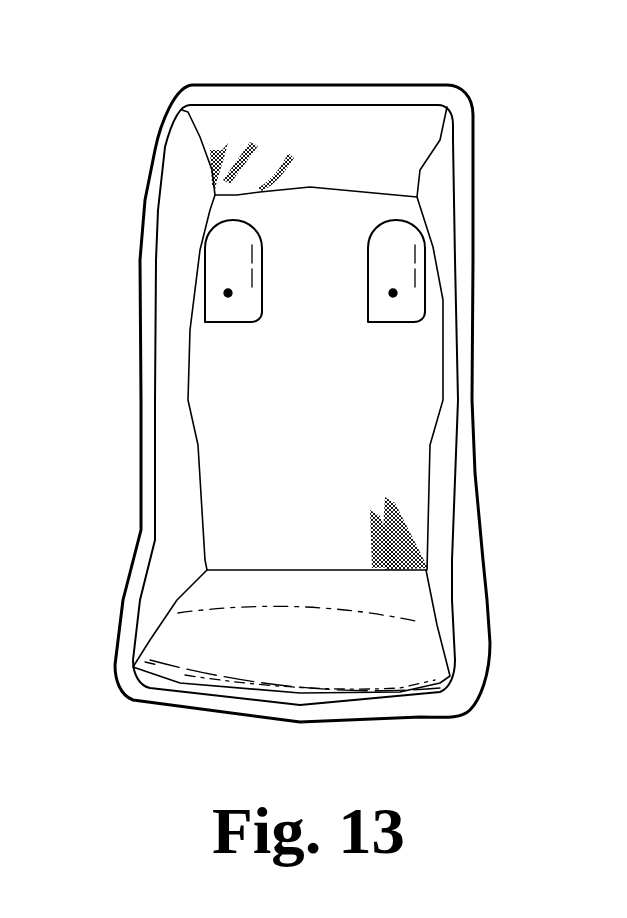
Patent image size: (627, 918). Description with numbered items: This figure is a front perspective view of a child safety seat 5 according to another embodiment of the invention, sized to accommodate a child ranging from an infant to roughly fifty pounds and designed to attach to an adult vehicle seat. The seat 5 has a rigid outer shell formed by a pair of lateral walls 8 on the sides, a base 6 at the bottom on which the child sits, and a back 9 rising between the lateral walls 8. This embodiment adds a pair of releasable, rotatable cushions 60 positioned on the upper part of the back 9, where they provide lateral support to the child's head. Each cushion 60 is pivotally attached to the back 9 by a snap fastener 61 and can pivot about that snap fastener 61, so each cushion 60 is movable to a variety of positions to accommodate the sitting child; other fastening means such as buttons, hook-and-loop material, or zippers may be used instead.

The child safety seat 5 is at (493, 53).
The base 6 is at (477, 673).
The lateral walls 8 is at (127, 550).
The back 9 is at (478, 473).
The releasable, rotatable cushions 60 is at (205, 275).
The snap fasteners 61 is at (400, 293).